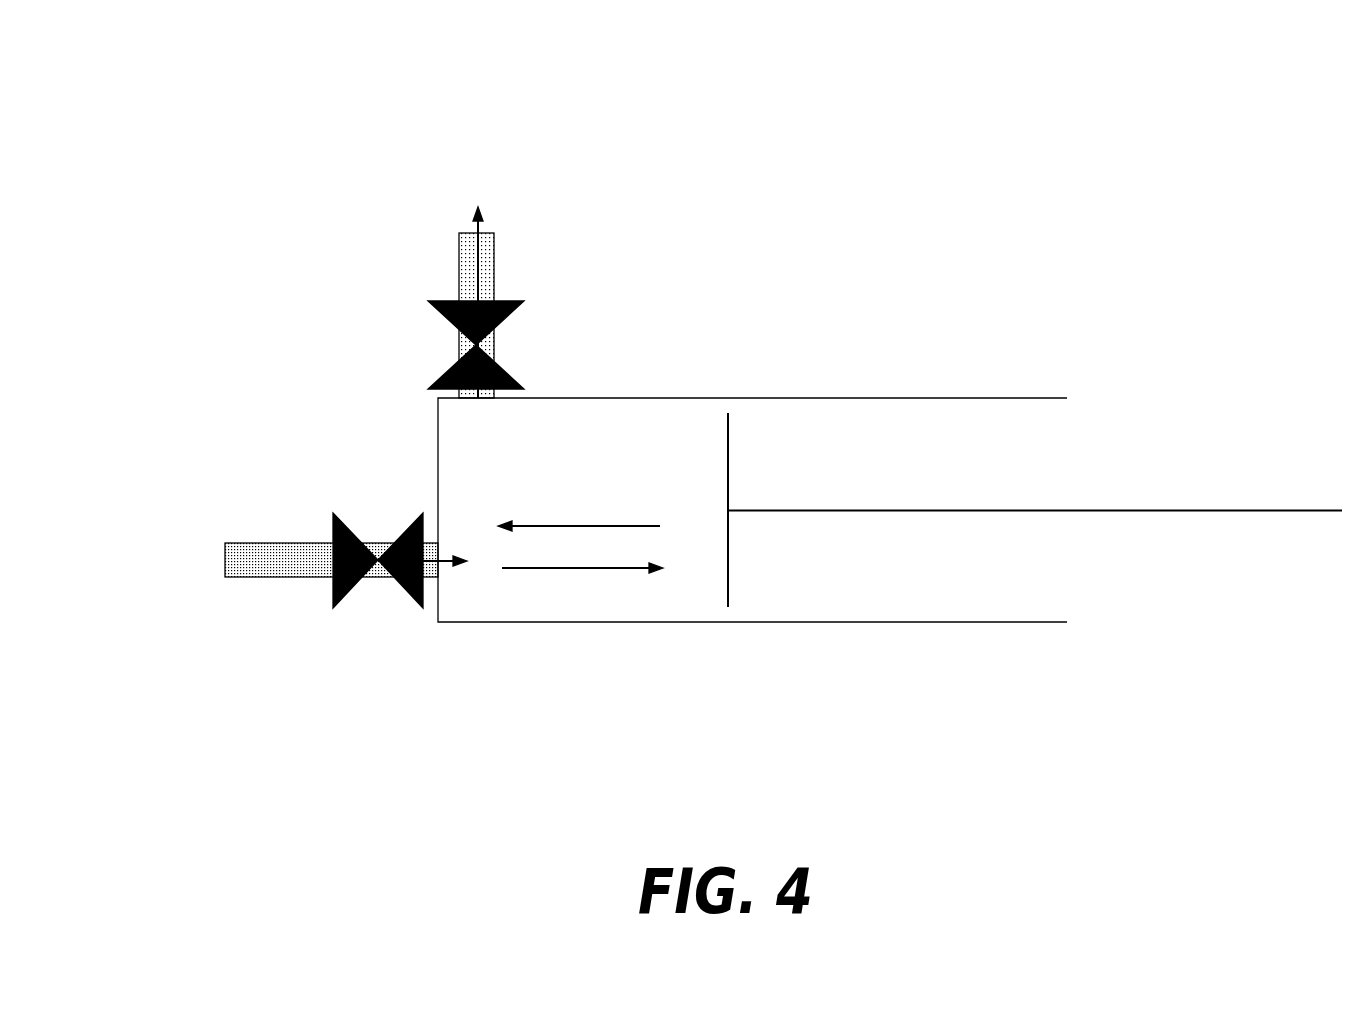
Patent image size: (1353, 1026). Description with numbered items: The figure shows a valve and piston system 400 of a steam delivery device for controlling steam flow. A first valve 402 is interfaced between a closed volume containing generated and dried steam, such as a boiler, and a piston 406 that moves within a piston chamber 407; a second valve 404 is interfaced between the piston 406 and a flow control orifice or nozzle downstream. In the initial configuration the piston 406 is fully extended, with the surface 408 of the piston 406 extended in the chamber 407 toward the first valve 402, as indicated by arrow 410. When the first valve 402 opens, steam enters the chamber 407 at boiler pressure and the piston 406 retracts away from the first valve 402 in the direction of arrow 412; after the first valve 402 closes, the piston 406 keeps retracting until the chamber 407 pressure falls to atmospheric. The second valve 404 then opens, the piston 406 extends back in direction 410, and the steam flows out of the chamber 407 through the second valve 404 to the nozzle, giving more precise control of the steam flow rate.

The valve and piston system 400 is at (803, 46).
The first valve 402 is at (356, 590).
The second valve 404 is at (513, 300).
The piston 406 is at (948, 512).
The piston chamber 407 is at (620, 600).
The surface of the piston 408 is at (727, 474).
The arrow 410 is at (562, 526).
The arrow 412 is at (525, 570).